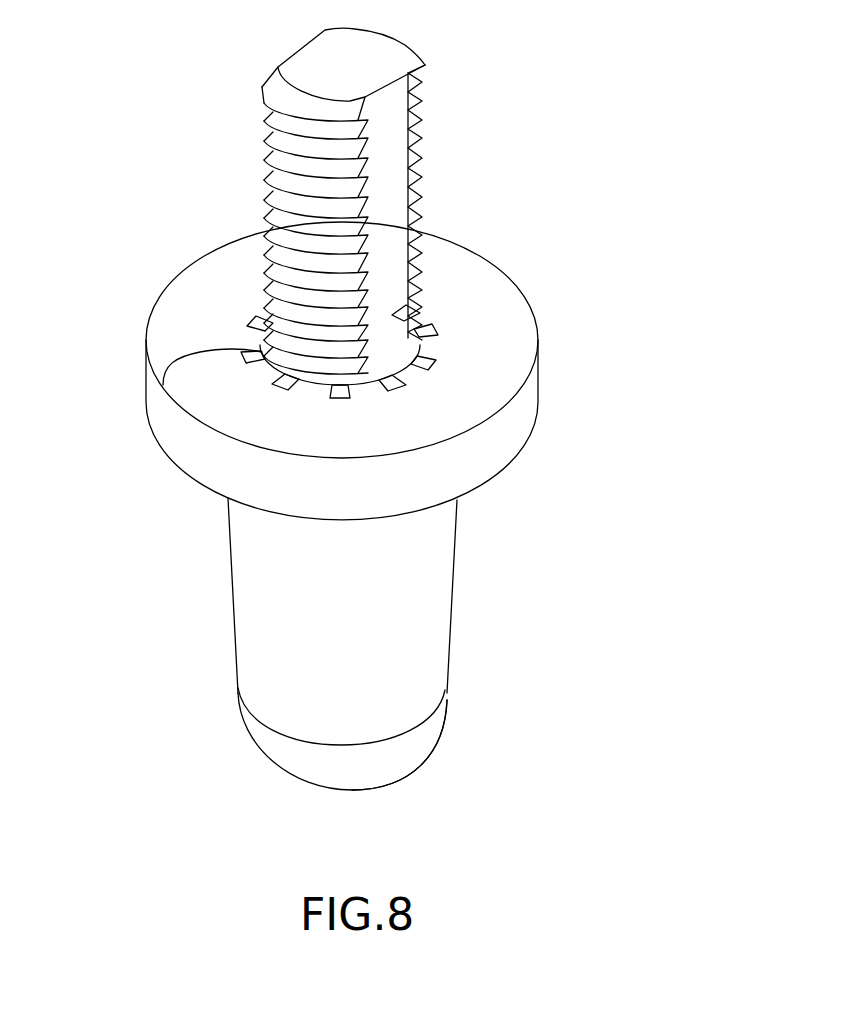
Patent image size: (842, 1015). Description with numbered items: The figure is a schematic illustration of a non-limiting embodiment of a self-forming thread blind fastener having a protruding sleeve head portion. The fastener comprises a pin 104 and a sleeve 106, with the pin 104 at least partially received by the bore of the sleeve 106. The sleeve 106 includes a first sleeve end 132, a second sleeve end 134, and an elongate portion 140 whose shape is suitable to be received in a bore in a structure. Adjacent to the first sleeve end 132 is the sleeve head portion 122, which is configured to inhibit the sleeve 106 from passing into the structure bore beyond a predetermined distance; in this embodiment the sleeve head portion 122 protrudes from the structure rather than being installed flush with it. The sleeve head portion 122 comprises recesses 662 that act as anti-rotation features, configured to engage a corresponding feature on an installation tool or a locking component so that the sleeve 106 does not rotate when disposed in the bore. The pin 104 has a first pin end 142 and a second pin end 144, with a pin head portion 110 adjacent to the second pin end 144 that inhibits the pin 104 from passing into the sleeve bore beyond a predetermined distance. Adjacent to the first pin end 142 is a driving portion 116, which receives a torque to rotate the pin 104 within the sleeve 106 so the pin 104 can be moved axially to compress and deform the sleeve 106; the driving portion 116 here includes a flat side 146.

The pin 104 is at (283, 140).
The first pin end 142 is at (363, 60).
The driving portion 116 is at (380, 117).
The flat side 146 is at (383, 153).
The first sleeve end 132 is at (211, 308).
The sleeve head portion 122 is at (490, 322).
The recesses 662 is at (163, 385).
The sleeve 106 is at (253, 585).
The elongate portion 140 is at (428, 585).
The second sleeve end 134 is at (263, 715).
The pin head portion 110 is at (328, 772).
The second pin end 144 is at (413, 770).